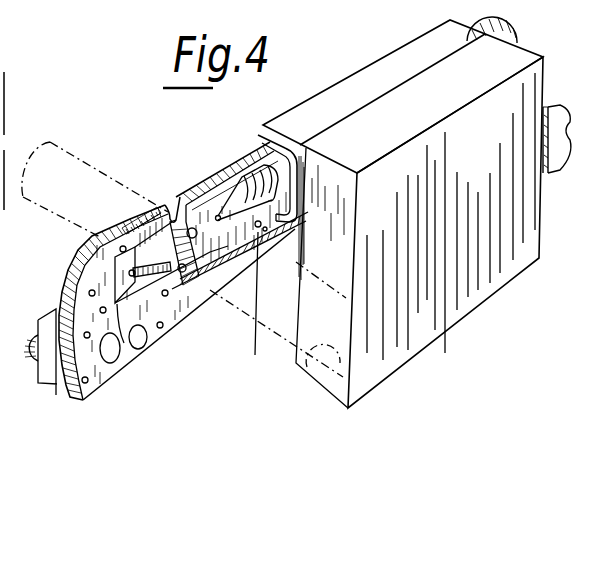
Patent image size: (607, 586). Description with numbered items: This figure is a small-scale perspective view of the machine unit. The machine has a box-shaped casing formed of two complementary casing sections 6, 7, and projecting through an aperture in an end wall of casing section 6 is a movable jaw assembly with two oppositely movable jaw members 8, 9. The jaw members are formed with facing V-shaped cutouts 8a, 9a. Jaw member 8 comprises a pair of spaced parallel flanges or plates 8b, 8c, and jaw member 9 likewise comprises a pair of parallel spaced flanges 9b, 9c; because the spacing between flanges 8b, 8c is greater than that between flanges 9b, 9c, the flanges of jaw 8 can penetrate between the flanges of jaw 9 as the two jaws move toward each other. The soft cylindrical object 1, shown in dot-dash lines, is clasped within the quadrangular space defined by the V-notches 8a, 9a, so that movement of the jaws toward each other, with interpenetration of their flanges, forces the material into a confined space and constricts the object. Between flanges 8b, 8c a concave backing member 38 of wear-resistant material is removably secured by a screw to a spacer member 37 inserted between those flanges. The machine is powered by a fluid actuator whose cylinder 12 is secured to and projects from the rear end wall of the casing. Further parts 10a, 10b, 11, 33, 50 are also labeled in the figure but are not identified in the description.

The soft cylindrical object 1 is at (80, 158).
The casing section 6 is at (370, 83).
The casing section 7 is at (518, 58).
The jaw member 8 is at (99, 233).
The V-shaped cutout 8a is at (146, 327).
The flange 8b is at (153, 210).
The flange 8c is at (138, 218).
The jaw member 9 is at (229, 245).
The V-shaped cutout 9a is at (206, 245).
The flange 9b is at (184, 224).
The flange 9c is at (252, 142).
The screw member 10a is at (194, 188).
The screw member tip 10b is at (188, 228).
The frame 11 is at (252, 136).
The cylinder 12 is at (557, 152).
The block front face 33 is at (262, 245).
The spacer member 37 is at (77, 277).
The concave backing member 38 is at (112, 368).
The knurled knob 50 is at (19, 353).